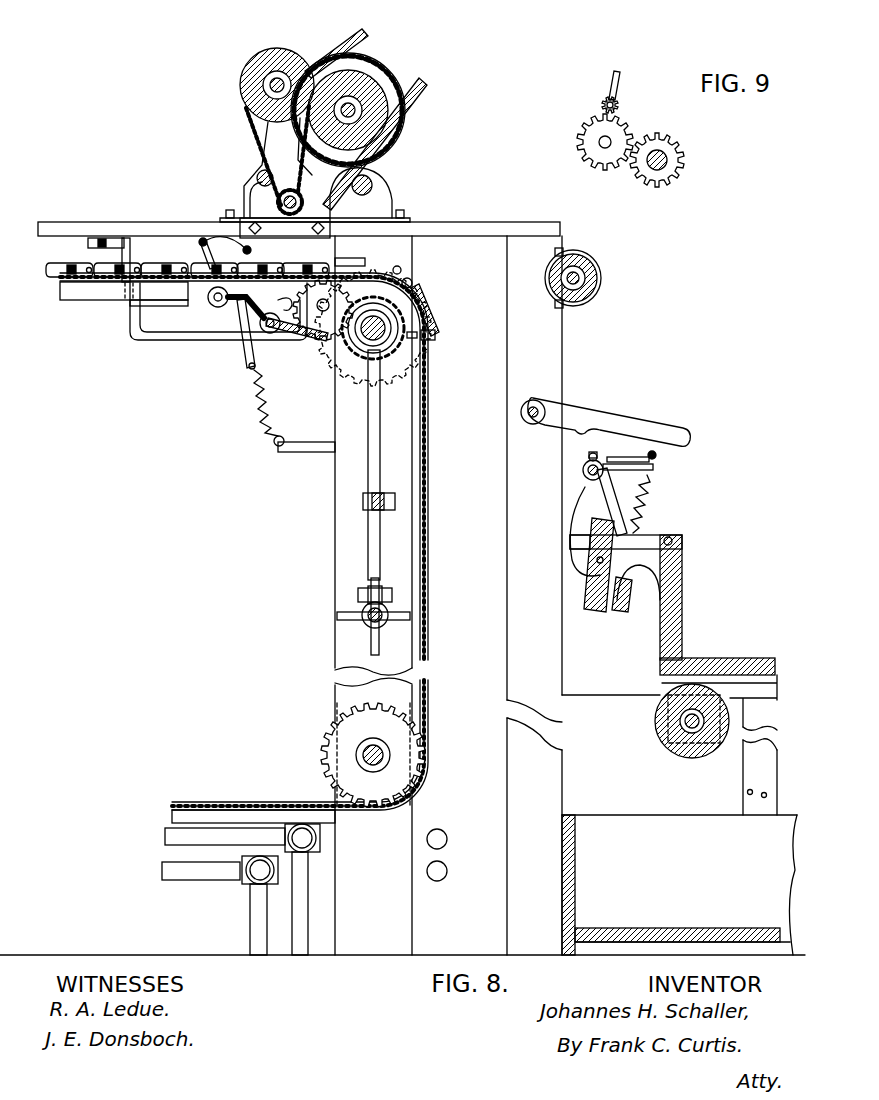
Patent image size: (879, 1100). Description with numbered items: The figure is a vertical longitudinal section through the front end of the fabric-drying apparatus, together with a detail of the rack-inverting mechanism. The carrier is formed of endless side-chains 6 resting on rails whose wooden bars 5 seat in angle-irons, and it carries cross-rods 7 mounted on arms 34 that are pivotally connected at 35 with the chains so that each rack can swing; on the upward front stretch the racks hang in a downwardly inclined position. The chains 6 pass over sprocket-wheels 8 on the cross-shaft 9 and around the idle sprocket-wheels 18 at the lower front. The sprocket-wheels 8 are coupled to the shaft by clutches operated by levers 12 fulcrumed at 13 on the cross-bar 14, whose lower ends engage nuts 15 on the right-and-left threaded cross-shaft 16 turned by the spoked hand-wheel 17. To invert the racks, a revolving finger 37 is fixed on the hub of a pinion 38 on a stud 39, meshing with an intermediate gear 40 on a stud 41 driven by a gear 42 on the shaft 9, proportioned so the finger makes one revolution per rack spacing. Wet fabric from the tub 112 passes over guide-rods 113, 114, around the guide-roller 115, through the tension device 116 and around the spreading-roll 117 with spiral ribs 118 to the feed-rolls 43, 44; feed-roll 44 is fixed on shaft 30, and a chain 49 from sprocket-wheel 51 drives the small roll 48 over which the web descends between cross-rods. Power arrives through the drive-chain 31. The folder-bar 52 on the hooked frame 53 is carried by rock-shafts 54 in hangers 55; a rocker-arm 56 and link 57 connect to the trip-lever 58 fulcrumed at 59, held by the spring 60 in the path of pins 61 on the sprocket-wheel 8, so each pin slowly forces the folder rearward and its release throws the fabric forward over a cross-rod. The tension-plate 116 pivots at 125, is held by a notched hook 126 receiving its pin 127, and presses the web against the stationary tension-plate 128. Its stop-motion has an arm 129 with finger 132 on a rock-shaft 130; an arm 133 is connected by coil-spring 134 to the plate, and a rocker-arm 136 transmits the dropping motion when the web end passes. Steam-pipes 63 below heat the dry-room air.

In FIG. 8, the wooden bar 5 is at (75, 300).
In FIG. 8, the endless side-chains 6 is at (112, 300).
In FIG. 8, the cross-rods 7 is at (70, 270).
In FIG. 8, the sprocket-wheels 8 is at (405, 368).
In FIG. 8, the cross-shaft 9 is at (396, 312).
In FIG. 9, the cross-shaft 9 is at (686, 158).
In FIG. 8, the levers 12 is at (366, 462).
In FIG. 8, the fulcrum 13 is at (363, 503).
In FIG. 8, the cross-bar 14 is at (380, 494).
In FIG. 8, the nuts 15 is at (392, 618).
In FIG. 8, the cross-shaft 16 is at (362, 612).
In FIG. 8, the spoked hand-wheel 17 is at (340, 620).
In FIG. 8, the sprocket-wheels 18 is at (338, 750).
In FIG. 8, the shaft 30 is at (362, 112).
In FIG. 8, the drive-chain 31 is at (424, 92).
In FIG. 8, the arms 34 is at (108, 276).
In FIG. 8, the pivotal connection 35 is at (105, 282).
In FIG. 8, the revolving arm or finger 37 is at (340, 262).
In FIG. 9, the revolving arm or finger 37 is at (620, 83).
In FIG. 9, the pinion 38 is at (620, 104).
In FIG. 9, the stud 39 is at (602, 108).
In FIG. 8, the intermediate gear 40 is at (247, 345).
In FIG. 9, the intermediate gear 40 is at (590, 152).
In FIG. 9, the stud 41 is at (598, 143).
In FIG. 9, the gear 42 is at (648, 174).
In FIG. 8, the feed-roll 43 is at (250, 88).
In FIG. 8, the feed-roll 44 is at (403, 84).
In FIG. 8, the small roll 48 is at (270, 200).
In FIG. 8, the chain 49 is at (268, 140).
In FIG. 8, the sprocket-wheel 51 is at (366, 36).
In FIG. 8, the cross-bar 52 is at (382, 90).
In FIG. 8, the frame 53 is at (200, 244).
In FIG. 8, the rock-shafts 54 is at (208, 300).
In FIG. 8, the hangers 55 is at (135, 336).
In FIG. 8, the rocker-arm 56 is at (280, 302).
In FIG. 8, the link 57 is at (260, 322).
In FIG. 8, the trip-lever 58 is at (346, 275).
In FIG. 8, the fulcrum 59 is at (285, 330).
In FIG. 8, the spring 60 is at (262, 395).
In FIG. 8, the pins 61 is at (438, 334).
In FIG. 8, the steam-pipes 63 is at (215, 838).
In FIG. 8, the tub or vat 112 is at (595, 826).
In FIG. 8, the guide-rod 113 is at (765, 798).
In FIG. 8, the guide-rod 114 is at (750, 789).
In FIG. 8, the guide-roller 115 is at (664, 736).
In FIG. 8, the tension device 116 is at (596, 606).
In FIG. 8, the spreading-roll 117 is at (600, 278).
In FIG. 8, the ribs 118 is at (596, 262).
In FIG. 8, the pivot mounting 125 is at (592, 562).
In FIG. 8, the hook 126 is at (652, 547).
In FIG. 8, the pin 127 is at (570, 542).
In FIG. 8, the stationary tension-plate 128 is at (622, 606).
In FIG. 8, the arm 129 is at (630, 452).
In FIG. 8, the rock-shaft 130 is at (583, 470).
In FIG. 8, the finger 132 is at (656, 458).
In FIG. 8, the arm 133 is at (600, 470).
In FIG. 8, the coil-spring 134 is at (648, 500).
In FIG. 8, the rocker-arm 136 is at (606, 500).